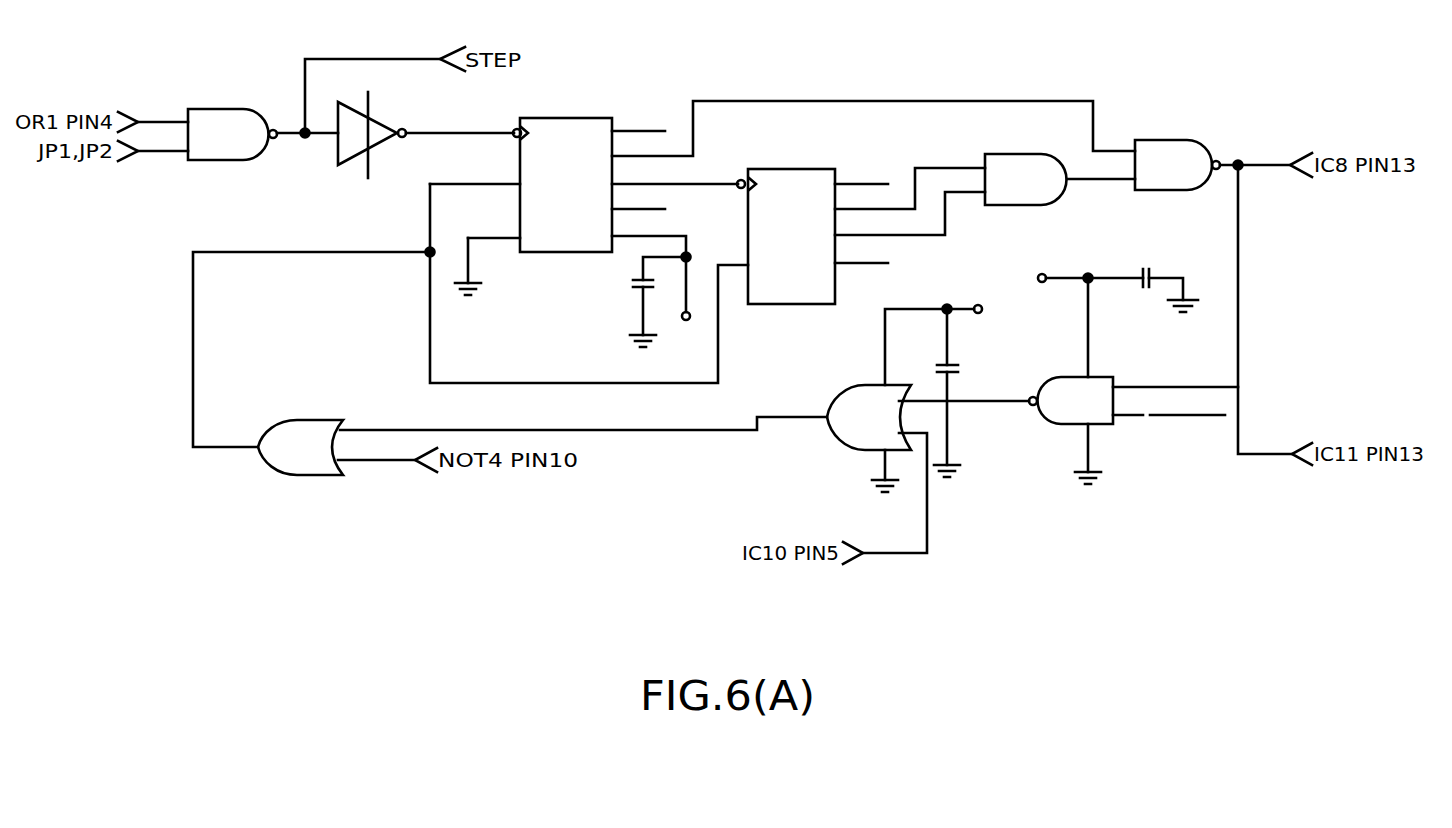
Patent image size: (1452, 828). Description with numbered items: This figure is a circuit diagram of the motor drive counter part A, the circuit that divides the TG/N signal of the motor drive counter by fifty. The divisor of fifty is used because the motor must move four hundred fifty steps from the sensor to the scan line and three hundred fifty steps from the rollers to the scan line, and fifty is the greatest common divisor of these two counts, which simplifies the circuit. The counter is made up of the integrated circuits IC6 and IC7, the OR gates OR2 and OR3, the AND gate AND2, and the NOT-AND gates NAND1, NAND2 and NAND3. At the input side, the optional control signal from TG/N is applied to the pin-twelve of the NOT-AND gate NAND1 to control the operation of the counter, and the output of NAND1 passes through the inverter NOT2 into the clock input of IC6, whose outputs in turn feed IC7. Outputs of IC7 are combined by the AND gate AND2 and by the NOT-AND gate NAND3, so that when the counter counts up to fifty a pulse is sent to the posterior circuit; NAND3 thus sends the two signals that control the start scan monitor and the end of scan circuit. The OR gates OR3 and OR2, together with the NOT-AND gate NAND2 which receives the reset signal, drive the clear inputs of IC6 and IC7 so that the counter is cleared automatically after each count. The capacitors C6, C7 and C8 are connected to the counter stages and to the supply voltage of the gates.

The NOT-AND gate NAND1 is at (232, 128).
The inverter NOT 2 NOT2 is at (380, 135).
The integrated circuit IC6 is at (570, 173).
The integrated circuit IC7 is at (790, 225).
The AND gate AND2 is at (1016, 175).
The NOT-AND gate NAND3 is at (1176, 160).
The NOT-AND gate NAND2 is at (1127, 416).
The OR gate OR2 is at (304, 440).
The OR gate OR3 is at (867, 426).
The capacitor C6 is at (658, 302).
The capacitor C7 is at (952, 384).
The capacitor C8 is at (1096, 279).